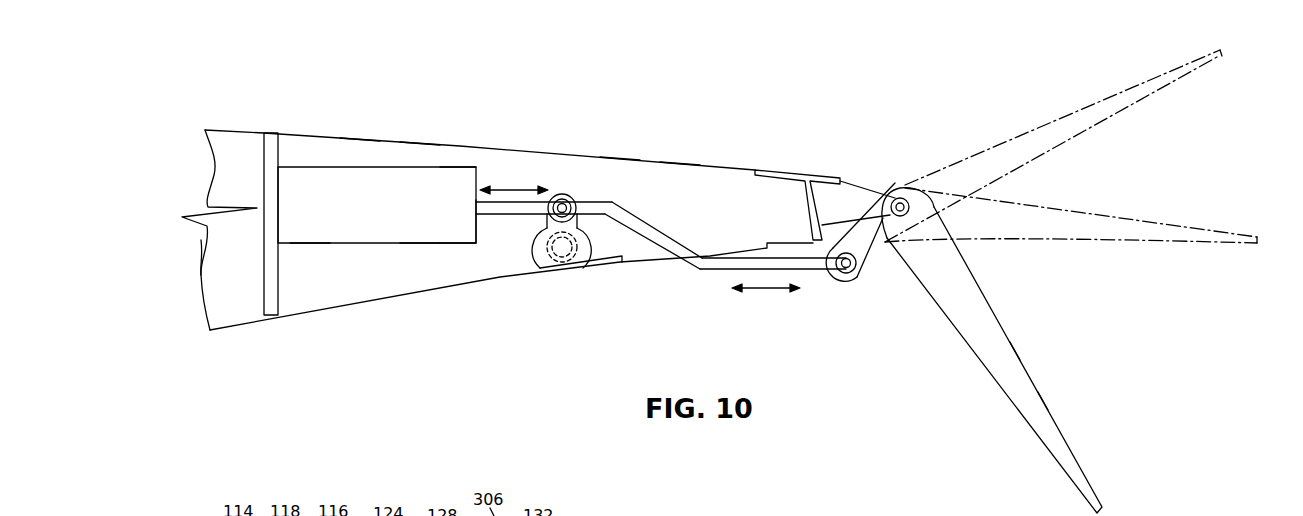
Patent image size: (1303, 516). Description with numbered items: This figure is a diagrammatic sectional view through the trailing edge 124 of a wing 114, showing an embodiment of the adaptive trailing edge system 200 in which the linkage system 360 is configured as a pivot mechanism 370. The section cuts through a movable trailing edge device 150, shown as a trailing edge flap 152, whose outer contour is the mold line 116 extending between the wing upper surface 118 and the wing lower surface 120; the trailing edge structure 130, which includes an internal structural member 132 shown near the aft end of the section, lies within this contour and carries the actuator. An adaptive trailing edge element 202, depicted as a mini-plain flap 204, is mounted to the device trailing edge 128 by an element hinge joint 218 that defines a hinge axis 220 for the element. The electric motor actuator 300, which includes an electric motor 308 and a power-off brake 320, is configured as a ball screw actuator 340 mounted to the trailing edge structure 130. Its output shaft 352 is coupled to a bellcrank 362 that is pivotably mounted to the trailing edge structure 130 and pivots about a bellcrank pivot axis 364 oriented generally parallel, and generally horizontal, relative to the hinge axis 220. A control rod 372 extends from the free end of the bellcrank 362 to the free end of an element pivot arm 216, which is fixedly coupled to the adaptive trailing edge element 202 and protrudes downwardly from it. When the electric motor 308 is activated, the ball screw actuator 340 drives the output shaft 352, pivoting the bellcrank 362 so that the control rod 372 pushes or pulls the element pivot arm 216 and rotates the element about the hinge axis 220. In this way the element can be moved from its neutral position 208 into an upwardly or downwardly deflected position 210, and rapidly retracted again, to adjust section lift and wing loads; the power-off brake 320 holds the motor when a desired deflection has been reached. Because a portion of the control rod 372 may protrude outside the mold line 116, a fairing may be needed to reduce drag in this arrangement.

The wing 114 is at (213, 128).
The wing upper surface 118 is at (262, 132).
The mold line 116 is at (313, 133).
The trailing edge 124 is at (358, 134).
The device trailing edge 128 is at (418, 141).
The adaptive trailing edge system 200 is at (464, 172).
The trailing edge device 150 is at (621, 156).
The trailing edge flap 152 is at (674, 158).
The rear spar 132 is at (807, 182).
The hinge axis 220 is at (893, 203).
The element hinge joint 218 is at (899, 188).
The neutral position 208 is at (1110, 118).
The trailing edge structure 130 is at (257, 256).
The wing lower surface 120 is at (236, 326).
The electric motor 308 is at (313, 245).
The electric motor actuator 300 is at (365, 245).
The power-off brake 320 is at (417, 245).
The ball screw actuator 340 is at (457, 245).
The output shaft 352 is at (510, 215).
The bellcrank pivot axis 364 is at (543, 230).
The bellcrank 362 is at (587, 252).
The pivot mechanism 370 is at (650, 238).
The linkage system 360 is at (702, 268).
The control rod 372 is at (815, 267).
The element pivot arm 216 is at (875, 262).
The adaptive trailing edge element 202 is at (984, 293).
The mini-plain flap 204 is at (1014, 350).
The deflected position 210 is at (1043, 400).